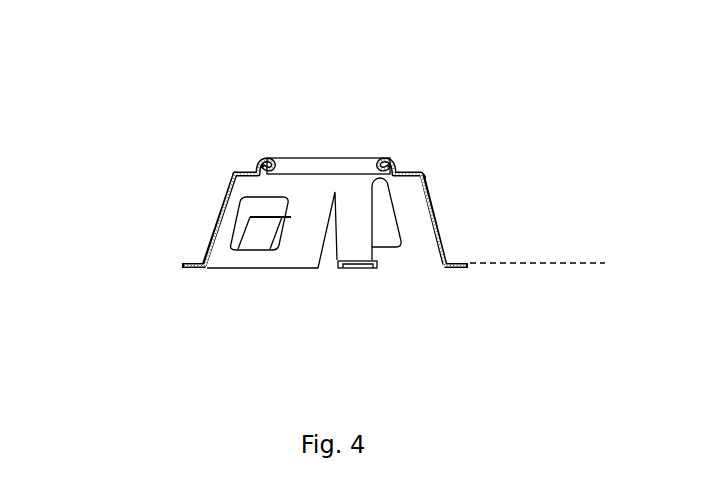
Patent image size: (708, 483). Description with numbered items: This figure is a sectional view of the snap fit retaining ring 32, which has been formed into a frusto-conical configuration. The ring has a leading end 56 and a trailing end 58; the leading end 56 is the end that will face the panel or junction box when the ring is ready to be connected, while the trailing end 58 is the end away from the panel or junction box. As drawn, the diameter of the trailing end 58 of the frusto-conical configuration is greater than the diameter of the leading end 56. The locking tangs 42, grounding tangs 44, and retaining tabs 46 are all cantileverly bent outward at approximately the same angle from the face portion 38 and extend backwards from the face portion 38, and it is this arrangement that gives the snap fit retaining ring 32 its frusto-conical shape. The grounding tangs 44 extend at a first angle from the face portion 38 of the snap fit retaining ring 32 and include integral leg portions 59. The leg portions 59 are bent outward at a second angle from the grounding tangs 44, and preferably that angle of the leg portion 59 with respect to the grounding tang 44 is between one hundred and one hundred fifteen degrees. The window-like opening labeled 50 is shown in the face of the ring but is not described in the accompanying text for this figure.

The snap fit retaining ring 32 is at (152, 183).
The face portion 38 is at (405, 172).
The locking tangs 42 is at (390, 247).
The grounding tangs 44 is at (217, 213).
The retaining tabs 46 is at (295, 248).
The window 50 is at (251, 243).
The leading end 56 is at (327, 157).
The trailing end 58 is at (298, 268).
The leg portions 59 is at (181, 263).